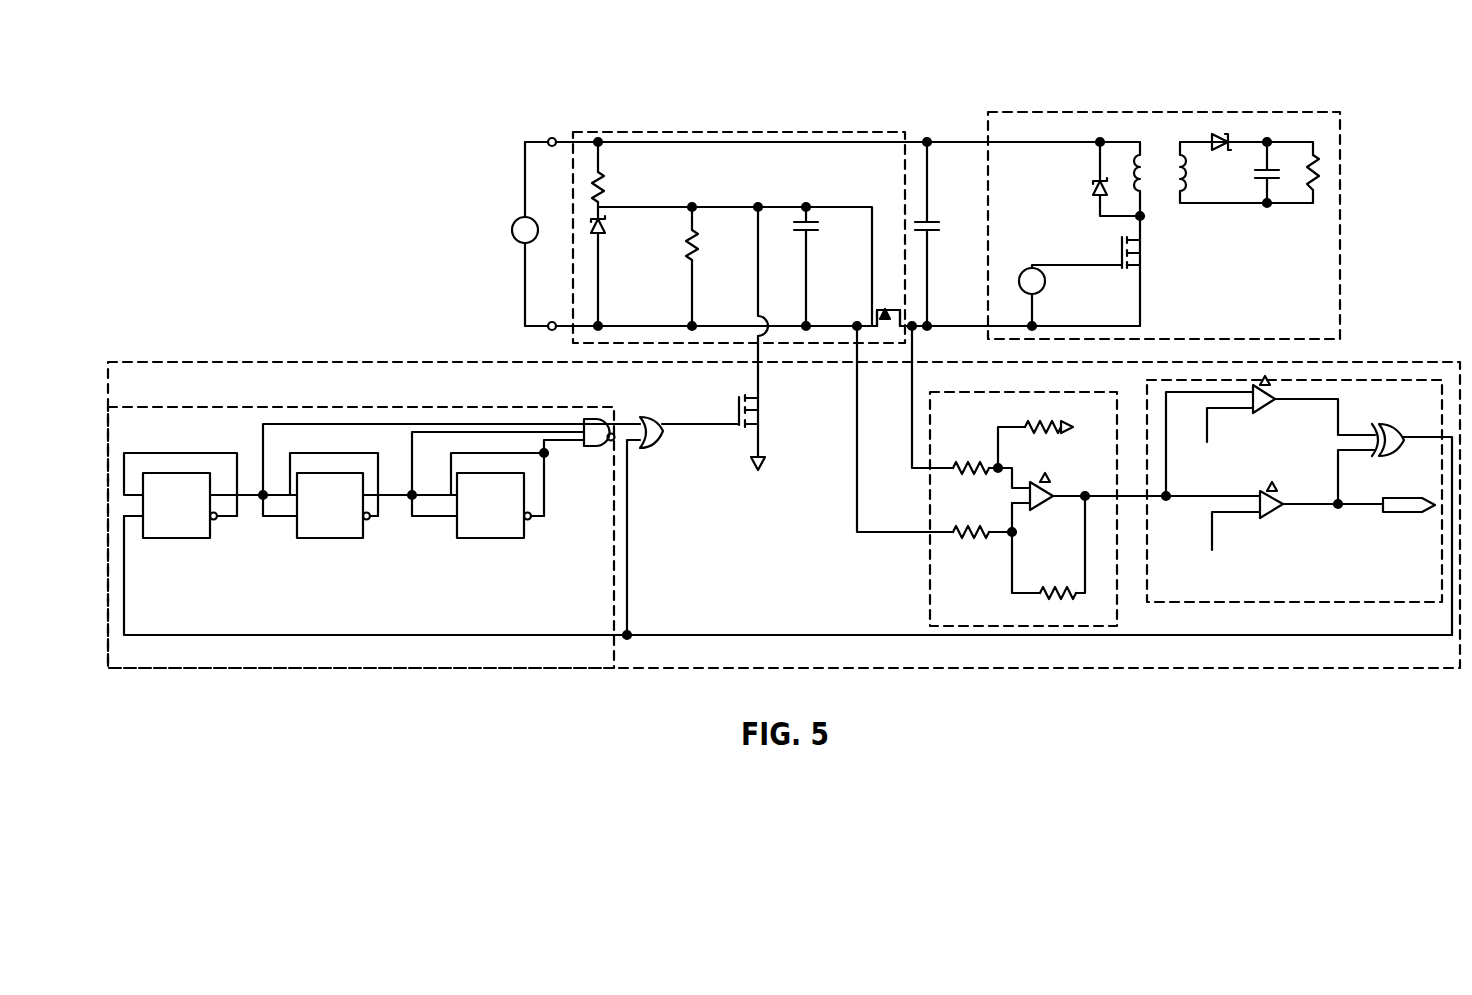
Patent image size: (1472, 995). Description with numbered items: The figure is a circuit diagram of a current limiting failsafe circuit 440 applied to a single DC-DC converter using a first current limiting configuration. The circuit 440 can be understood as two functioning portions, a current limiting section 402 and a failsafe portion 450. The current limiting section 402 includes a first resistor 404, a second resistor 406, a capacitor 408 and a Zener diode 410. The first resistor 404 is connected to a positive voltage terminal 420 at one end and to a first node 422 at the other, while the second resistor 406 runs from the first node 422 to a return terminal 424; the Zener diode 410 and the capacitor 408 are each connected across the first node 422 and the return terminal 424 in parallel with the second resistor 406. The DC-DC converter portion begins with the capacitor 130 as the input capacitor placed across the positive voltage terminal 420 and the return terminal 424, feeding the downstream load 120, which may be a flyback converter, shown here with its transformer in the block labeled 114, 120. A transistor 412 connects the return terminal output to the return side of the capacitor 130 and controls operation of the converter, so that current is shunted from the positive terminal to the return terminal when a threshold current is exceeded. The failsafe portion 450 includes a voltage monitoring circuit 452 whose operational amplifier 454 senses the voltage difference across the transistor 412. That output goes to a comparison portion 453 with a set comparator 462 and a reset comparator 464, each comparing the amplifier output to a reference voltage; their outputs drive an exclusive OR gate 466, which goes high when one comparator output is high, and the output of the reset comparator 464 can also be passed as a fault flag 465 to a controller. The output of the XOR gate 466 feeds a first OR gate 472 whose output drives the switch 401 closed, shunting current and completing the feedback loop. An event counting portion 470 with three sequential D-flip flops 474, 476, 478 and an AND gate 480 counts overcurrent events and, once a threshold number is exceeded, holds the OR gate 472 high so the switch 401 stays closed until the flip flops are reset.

The current limiting failsafe circuit 440 is at (257, 99).
The positive voltage terminal 420 is at (552, 138).
The return terminal 424 is at (552, 328).
The current limiting section 402 is at (744, 205).
The first resistor 404 is at (601, 168).
The second resistor 406 is at (687, 258).
The capacitor 408 is at (812, 223).
The Zener diode 410 is at (603, 223).
The transistor 412 is at (882, 312).
The first node 422 is at (707, 207).
The capacitor 130 is at (932, 222).
The transformer 114 is at (1222, 112).
The downstream load 120 is at (1169, 232).
The switch 401 is at (760, 416).
The failsafe portion 450 is at (988, 668).
The event counting portion 470 is at (248, 623).
The D-flip flop 474 is at (177, 538).
The D-flip flop 476 is at (330, 538).
The D-flip flop 478 is at (488, 538).
The AND gate 480 is at (593, 448).
The first OR gate 472 is at (645, 447).
The voltage monitoring circuit 452 is at (1004, 476).
The operational amplifier 454 is at (1032, 510).
The comparison portion 453 is at (1300, 470).
The set comparator 462 is at (1258, 412).
The reset comparator 464 is at (1262, 513).
The exclusive OR gate 466 is at (1382, 428).
The fault flag 465 is at (1392, 513).